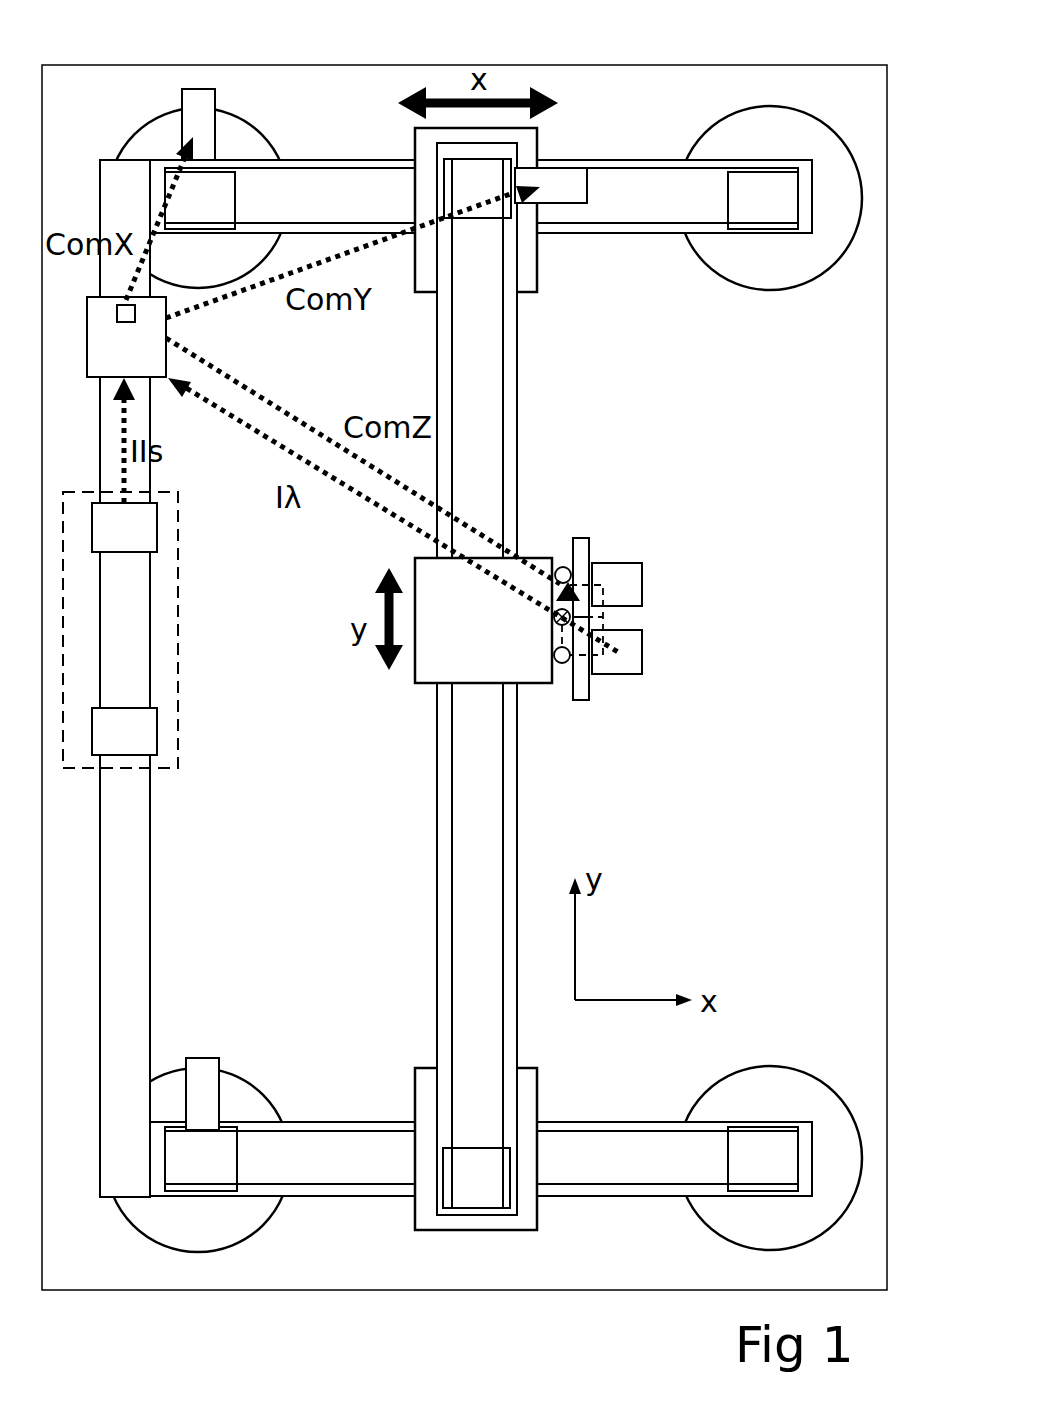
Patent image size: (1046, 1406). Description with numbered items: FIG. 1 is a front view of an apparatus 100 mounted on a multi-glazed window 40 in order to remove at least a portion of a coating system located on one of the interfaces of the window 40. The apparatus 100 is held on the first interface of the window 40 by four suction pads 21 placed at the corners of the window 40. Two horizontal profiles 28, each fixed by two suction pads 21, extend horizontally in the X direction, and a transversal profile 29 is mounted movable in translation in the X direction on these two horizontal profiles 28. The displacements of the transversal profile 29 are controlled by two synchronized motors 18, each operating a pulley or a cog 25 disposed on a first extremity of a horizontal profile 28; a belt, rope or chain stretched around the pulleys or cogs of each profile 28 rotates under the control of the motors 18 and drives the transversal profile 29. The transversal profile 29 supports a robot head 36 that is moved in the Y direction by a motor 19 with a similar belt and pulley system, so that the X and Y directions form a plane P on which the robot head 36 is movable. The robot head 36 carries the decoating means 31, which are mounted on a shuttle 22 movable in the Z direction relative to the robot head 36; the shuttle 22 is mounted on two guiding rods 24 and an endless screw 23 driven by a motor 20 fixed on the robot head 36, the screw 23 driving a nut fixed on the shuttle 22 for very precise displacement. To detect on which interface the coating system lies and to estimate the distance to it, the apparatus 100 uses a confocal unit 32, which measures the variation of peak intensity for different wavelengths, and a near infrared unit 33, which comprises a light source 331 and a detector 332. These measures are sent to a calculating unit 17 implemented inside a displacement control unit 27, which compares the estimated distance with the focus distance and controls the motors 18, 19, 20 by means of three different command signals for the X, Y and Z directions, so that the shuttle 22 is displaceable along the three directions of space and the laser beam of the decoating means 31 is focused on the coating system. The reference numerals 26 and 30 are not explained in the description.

The apparatus 100 is at (428, 42).
The plane P is at (366, 1274).
The synchronized motors 18 is at (197, 113).
The motor 19 is at (570, 178).
The pulley or cog 25 is at (760, 167).
The suction pads 21 is at (783, 1097).
The multi-glazed window 40 is at (862, 125).
The upper x rail 26 is at (243, 196).
The horizontal profiles 28 is at (335, 1130).
The left rail 30 is at (115, 920).
The transversal profile 29 is at (440, 885).
The robot head 36 is at (447, 668).
The calculating unit 17 is at (118, 313).
The displacement control unit 27 is at (130, 355).
The near infrared unit 33 is at (178, 747).
The light source 331 is at (98, 503).
The detector 332 is at (112, 757).
The shuttle 22 is at (583, 552).
The decoating means 31 is at (610, 577).
The confocal unit 32 is at (637, 663).
The motor 20 is at (598, 617).
The endless screw 23 is at (572, 623).
The guiding rods 24 is at (563, 663).